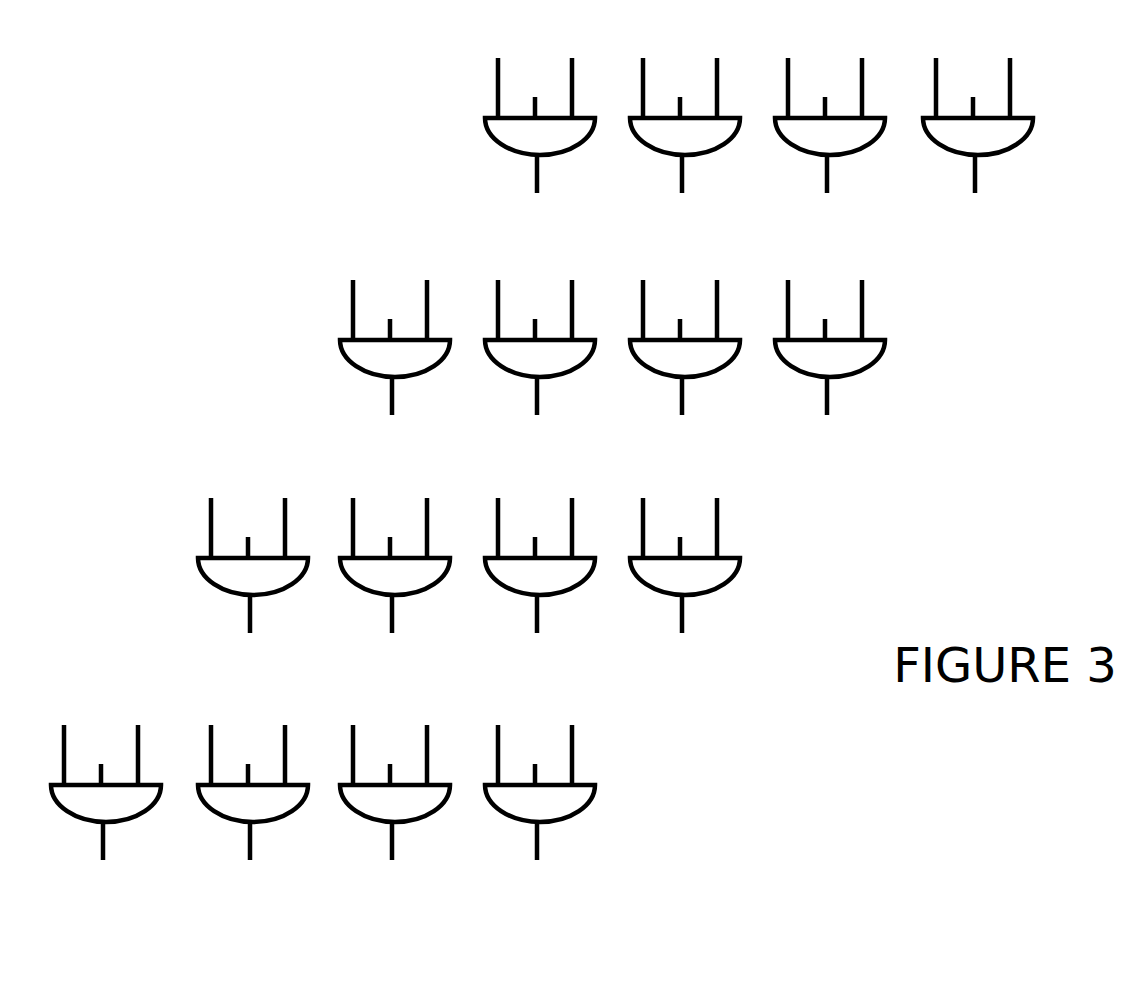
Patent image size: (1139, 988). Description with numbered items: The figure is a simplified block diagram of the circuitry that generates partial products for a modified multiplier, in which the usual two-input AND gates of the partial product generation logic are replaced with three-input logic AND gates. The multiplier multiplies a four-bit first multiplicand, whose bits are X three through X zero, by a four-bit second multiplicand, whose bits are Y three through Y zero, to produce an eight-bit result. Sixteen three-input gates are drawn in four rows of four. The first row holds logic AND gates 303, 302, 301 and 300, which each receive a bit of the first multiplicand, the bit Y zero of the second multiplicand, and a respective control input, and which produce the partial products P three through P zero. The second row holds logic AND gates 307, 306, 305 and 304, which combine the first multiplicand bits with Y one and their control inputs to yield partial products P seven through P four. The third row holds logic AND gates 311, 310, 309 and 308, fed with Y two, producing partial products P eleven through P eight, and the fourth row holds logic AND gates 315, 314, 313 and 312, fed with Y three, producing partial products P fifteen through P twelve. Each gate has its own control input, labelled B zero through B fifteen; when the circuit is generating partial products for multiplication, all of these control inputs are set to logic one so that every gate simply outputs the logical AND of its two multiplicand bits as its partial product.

The logic AND gate 300 is at (941, 152).
The logic AND gate 301 is at (793, 152).
The logic AND gate 302 is at (648, 152).
The logic AND gate 303 is at (503, 152).
The logic AND gate 304 is at (793, 374).
The logic AND gate 305 is at (648, 374).
The logic AND gate 306 is at (503, 374).
The logic AND gate 307 is at (358, 374).
The logic AND gate 308 is at (648, 592).
The logic AND gate 309 is at (503, 592).
The logic AND gate 310 is at (358, 592).
The logic AND gate 311 is at (216, 592).
The logic AND gate 312 is at (503, 819).
The logic AND gate 313 is at (358, 819).
The logic AND gate 314 is at (216, 819).
The logic AND gate 315 is at (69, 819).